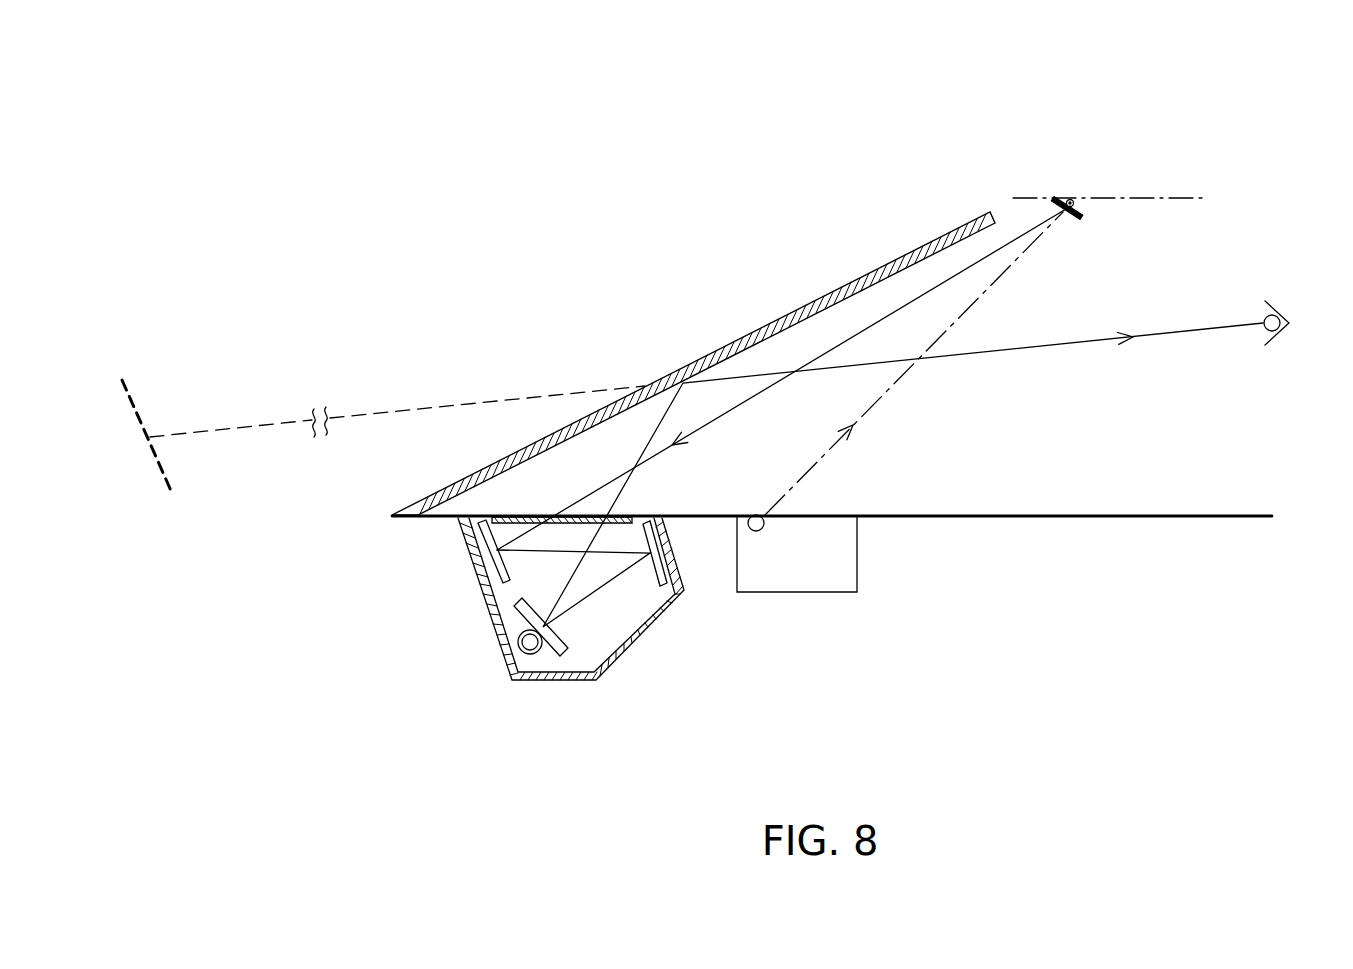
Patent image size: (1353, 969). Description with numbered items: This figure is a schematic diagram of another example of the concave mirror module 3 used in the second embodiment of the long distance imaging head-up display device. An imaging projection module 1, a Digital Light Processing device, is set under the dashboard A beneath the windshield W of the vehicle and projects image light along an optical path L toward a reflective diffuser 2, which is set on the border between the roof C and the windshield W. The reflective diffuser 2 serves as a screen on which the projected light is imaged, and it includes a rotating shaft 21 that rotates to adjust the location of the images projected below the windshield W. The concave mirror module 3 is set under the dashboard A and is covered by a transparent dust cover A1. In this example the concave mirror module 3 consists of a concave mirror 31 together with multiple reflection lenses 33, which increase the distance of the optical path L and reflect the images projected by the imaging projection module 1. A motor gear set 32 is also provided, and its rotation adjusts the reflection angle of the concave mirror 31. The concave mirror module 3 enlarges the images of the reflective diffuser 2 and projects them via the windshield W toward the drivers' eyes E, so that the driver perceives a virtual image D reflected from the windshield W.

The imaging projection module 1 is at (858, 562).
The reflective diffuser 2 is at (1083, 209).
The rotating shaft 21 is at (1077, 200).
The concave mirror module 3 is at (485, 605).
The concave mirror 31 is at (567, 647).
The motor gear set 32 is at (521, 652).
The reflection lenses 33 is at (508, 572).
The dashboard A is at (1045, 516).
The transparent dust cover A1 is at (532, 517).
The windshield W is at (760, 328).
The roof C is at (1147, 198).
The virtual image D is at (133, 402).
The drivers' eyes E is at (1280, 312).
The optical path L is at (880, 400).